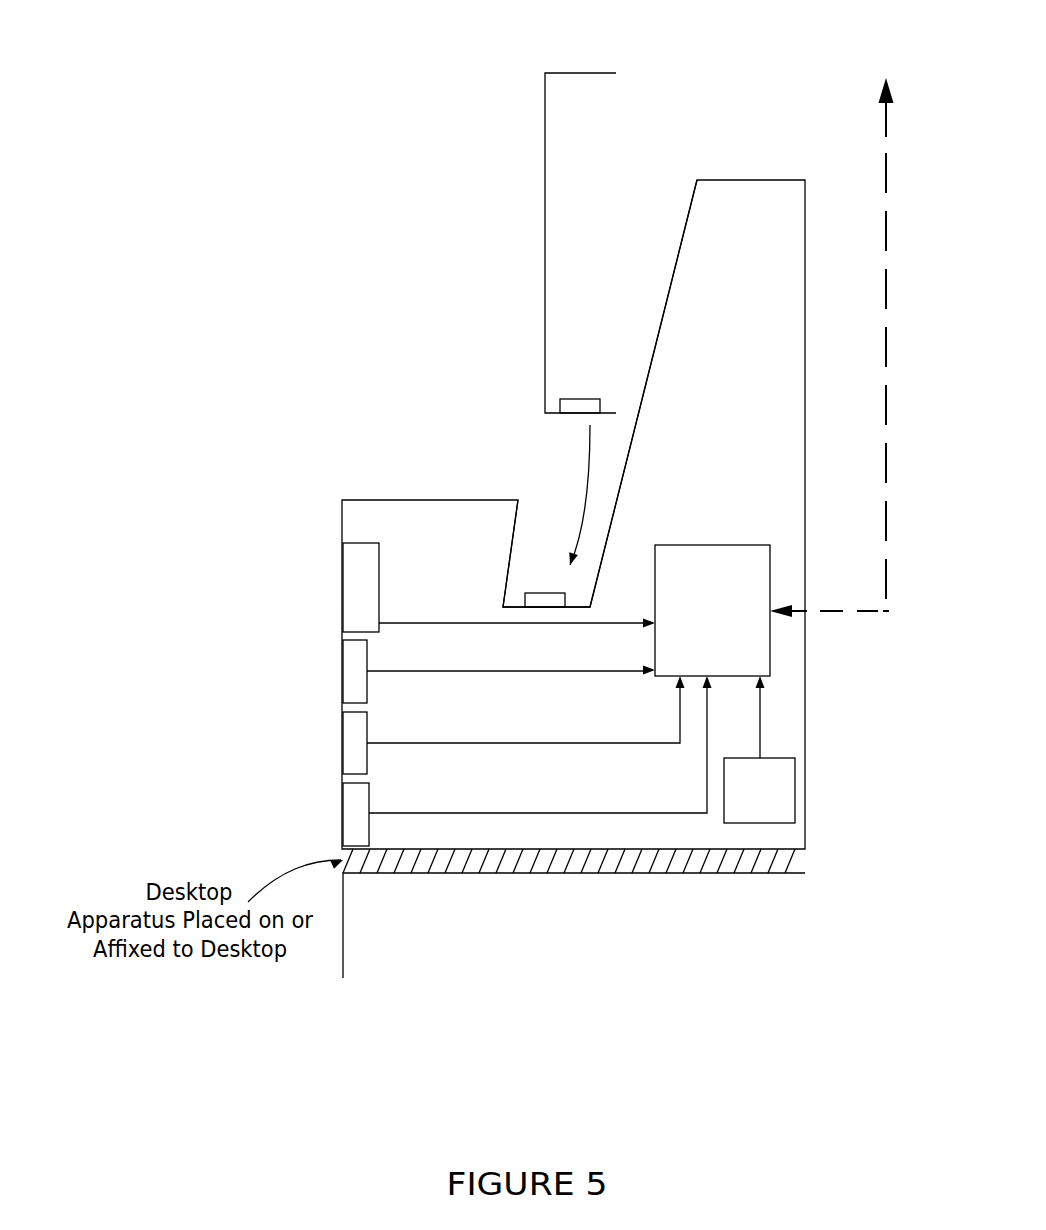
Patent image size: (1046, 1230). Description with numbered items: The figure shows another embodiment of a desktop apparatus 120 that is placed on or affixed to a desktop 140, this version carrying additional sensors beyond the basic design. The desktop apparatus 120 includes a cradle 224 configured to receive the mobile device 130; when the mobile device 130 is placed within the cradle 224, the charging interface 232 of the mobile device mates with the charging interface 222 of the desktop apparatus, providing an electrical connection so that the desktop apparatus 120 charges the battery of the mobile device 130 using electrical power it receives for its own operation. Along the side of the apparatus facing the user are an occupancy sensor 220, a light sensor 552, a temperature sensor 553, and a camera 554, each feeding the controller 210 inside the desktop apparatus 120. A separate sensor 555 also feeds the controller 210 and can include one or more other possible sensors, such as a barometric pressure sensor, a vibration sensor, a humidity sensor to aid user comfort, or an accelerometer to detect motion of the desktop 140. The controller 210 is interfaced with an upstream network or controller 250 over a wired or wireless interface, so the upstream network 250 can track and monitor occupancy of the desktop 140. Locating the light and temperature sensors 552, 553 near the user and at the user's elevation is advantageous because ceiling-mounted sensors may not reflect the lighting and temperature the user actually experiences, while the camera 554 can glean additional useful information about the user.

The desktop apparatus 120 is at (715, 416).
The mobile device 130 is at (566, 229).
The desktop 140 is at (553, 946).
The controller 210 is at (694, 654).
The occupancy sensor 220 is at (345, 587).
The charging interface 222 is at (543, 588).
The cradle 224 is at (553, 480).
The charging interface 232 is at (576, 414).
The upstream network or controller 250 is at (832, 319).
The light sensor 552 is at (340, 672).
The temperature sensor 553 is at (340, 742).
The camera 554 is at (340, 813).
The other sensors 555 is at (764, 791).